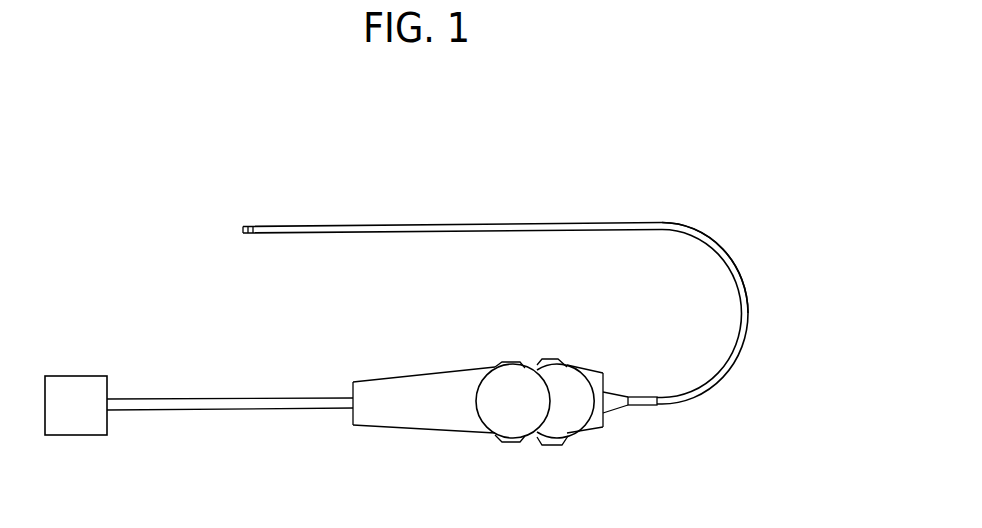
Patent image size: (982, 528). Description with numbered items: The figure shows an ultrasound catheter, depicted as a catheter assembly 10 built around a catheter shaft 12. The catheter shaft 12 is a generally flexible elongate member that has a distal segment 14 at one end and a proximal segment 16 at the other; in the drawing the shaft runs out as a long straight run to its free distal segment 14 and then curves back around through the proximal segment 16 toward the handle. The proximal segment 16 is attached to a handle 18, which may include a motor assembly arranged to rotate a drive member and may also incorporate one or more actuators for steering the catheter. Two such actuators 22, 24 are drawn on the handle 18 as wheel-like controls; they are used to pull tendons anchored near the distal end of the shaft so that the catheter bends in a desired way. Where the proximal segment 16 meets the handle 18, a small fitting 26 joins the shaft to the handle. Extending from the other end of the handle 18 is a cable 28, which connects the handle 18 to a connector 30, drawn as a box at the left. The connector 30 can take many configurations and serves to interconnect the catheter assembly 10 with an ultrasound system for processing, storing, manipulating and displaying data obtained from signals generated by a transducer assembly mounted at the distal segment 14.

The catheter assembly 10 is at (590, 132).
The catheter shaft 12 is at (402, 223).
The distal segment 14 is at (268, 226).
The proximal segment 16 is at (733, 260).
The handle 18 is at (426, 415).
The actuator 22 is at (515, 358).
The actuator 24 is at (550, 358).
The connector 26 is at (630, 405).
The cable 28 is at (258, 399).
The connector 30 is at (90, 417).